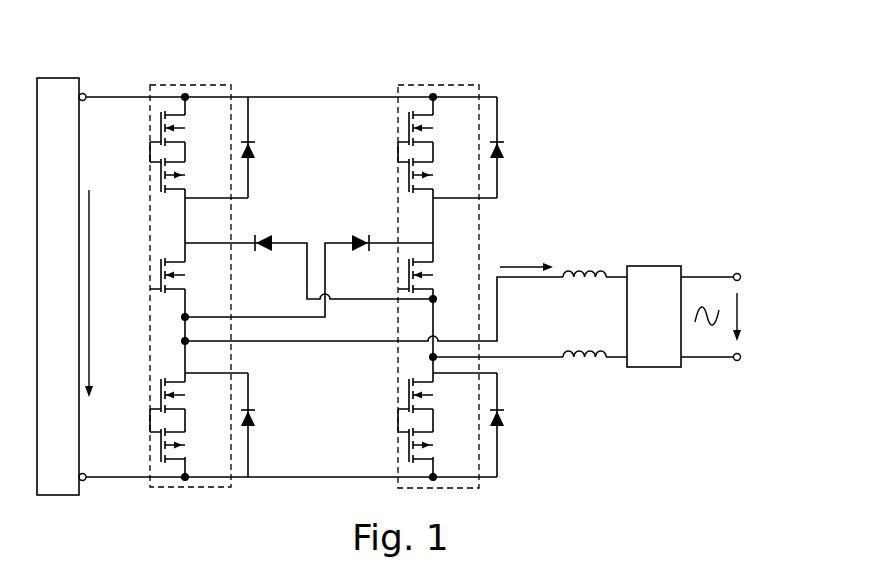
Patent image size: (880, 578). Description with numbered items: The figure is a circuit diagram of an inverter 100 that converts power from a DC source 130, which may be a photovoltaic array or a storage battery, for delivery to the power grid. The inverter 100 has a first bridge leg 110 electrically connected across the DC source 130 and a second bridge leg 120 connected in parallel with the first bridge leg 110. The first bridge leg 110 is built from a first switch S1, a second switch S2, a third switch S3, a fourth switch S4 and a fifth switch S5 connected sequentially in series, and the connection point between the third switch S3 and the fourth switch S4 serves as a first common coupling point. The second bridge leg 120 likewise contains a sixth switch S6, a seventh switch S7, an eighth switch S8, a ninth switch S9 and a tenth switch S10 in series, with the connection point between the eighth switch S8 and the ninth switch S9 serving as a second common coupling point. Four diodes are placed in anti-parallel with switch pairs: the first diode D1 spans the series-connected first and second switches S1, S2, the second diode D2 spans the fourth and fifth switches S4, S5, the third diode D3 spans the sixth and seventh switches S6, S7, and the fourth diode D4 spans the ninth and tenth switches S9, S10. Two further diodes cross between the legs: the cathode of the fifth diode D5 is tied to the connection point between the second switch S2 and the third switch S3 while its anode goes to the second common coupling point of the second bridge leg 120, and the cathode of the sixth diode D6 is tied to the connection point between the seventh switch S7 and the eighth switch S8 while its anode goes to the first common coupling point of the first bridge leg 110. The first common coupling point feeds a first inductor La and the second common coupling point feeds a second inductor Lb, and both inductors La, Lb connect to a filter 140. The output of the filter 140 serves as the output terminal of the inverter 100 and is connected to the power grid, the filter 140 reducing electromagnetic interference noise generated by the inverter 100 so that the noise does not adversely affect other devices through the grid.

The inverter 100 is at (72, 33).
The first bridge leg 110 is at (203, 85).
The second bridge leg 120 is at (452, 85).
The DC source 130 is at (68, 207).
The filter 140 is at (674, 328).
The first switch S1 is at (182, 128).
The second switch S2 is at (182, 175).
The third switch S3 is at (182, 275).
The fourth switch S4 is at (182, 395).
The fifth switch S5 is at (182, 445).
The sixth switch S6 is at (430, 128).
The seventh switch S7 is at (430, 175).
The eighth switch S8 is at (430, 275).
The ninth switch S9 is at (430, 395).
The tenth switch S10 is at (437, 445).
The first diode D1 is at (265, 147).
The second diode D2 is at (265, 425).
The third diode D3 is at (514, 147).
The fourth diode D4 is at (514, 425).
The fifth diode D5 is at (264, 230).
The sixth diode D6 is at (363, 230).
The first inductor La is at (584, 293).
The second inductor Lb is at (584, 371).